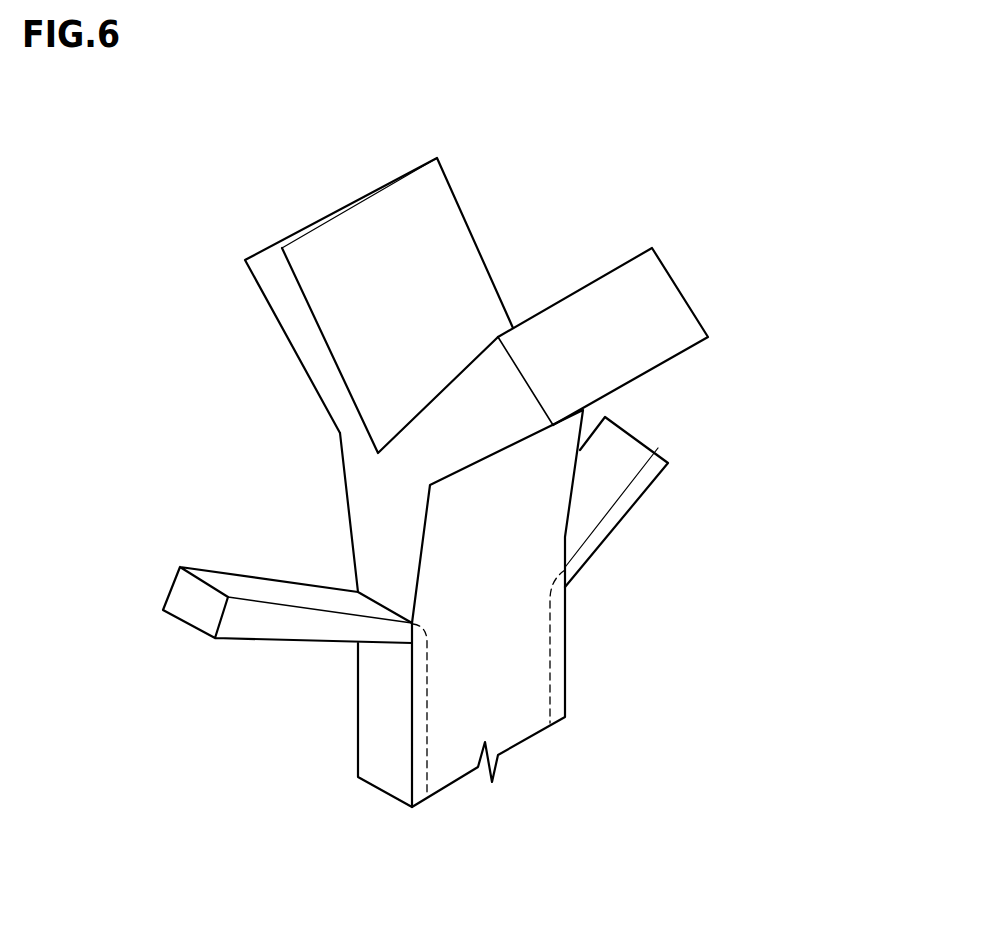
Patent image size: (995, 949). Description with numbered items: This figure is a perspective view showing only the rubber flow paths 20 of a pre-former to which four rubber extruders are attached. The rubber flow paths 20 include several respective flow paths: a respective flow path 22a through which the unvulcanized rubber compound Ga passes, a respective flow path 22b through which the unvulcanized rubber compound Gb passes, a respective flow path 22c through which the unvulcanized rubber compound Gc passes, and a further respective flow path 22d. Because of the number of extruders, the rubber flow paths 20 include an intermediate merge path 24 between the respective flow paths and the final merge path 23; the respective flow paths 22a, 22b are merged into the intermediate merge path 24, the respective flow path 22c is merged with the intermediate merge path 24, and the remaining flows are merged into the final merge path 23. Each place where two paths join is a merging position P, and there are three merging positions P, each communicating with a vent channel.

The rubber flow paths 20 is at (491, 482).
The respective flow path 22a is at (275, 285).
The respective flow path 22b is at (682, 290).
The respective flow path 22c is at (197, 602).
The fourth flap portion 22d is at (630, 432).
The final merge path 23 is at (565, 652).
The intermediate merge path 24 is at (350, 502).
The merging position P is at (369, 433).